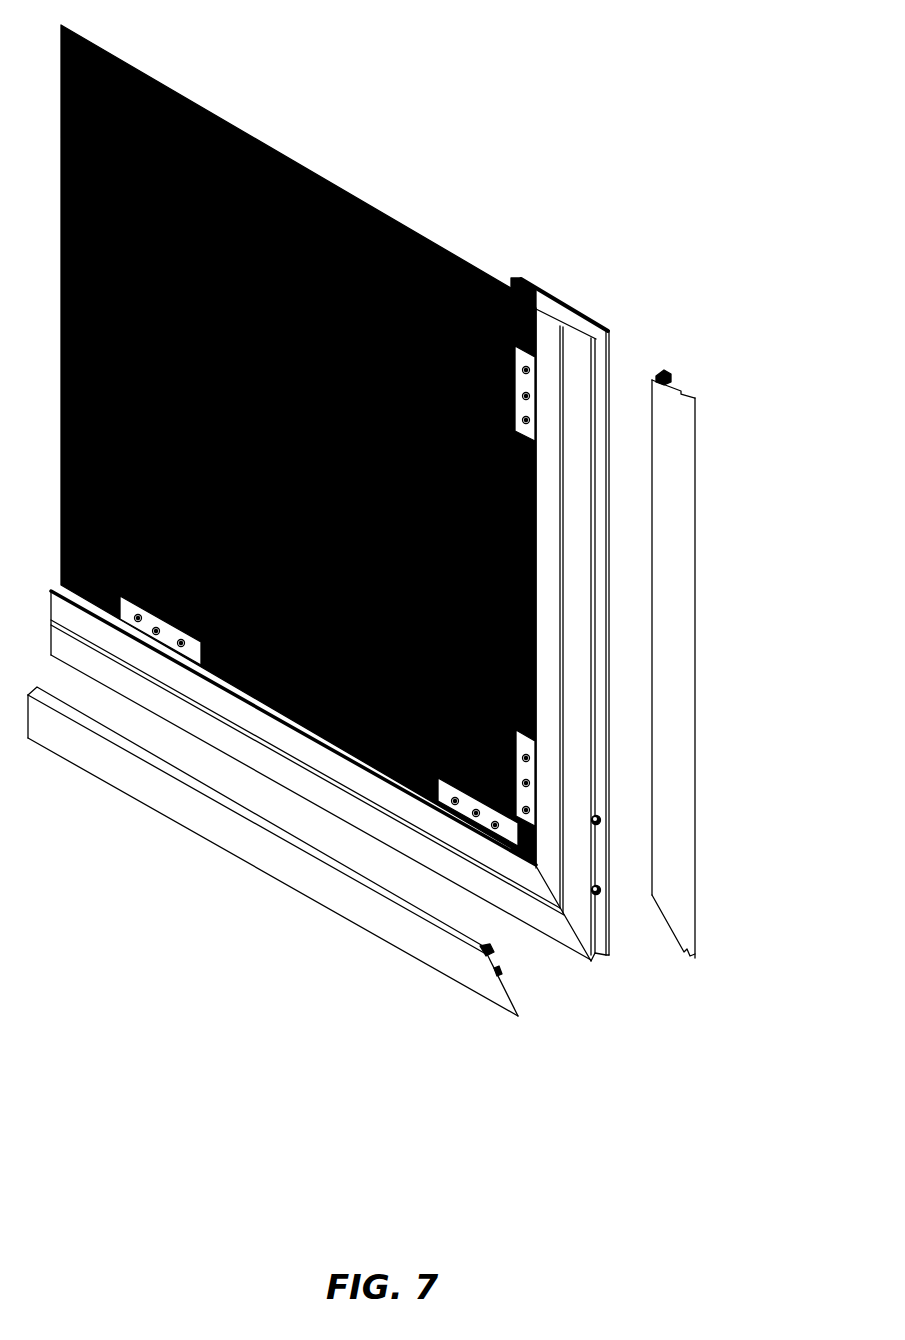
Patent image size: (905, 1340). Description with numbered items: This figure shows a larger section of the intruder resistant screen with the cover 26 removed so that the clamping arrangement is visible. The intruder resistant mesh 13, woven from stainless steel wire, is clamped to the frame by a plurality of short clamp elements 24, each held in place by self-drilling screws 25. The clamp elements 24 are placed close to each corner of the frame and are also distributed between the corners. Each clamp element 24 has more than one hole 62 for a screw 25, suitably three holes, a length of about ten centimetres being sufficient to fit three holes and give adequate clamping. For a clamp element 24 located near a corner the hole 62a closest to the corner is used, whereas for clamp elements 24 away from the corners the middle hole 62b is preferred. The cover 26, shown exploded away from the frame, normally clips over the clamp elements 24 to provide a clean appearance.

The intruder resistant mesh 13 is at (305, 170).
The clamp element 24 is at (528, 426).
The self-drilling screw 25 is at (519, 389).
The hole 62 is at (519, 363).
The hole closest to the corner 62a is at (480, 823).
The middle hole 62b is at (520, 777).
The cover 26 is at (667, 662).